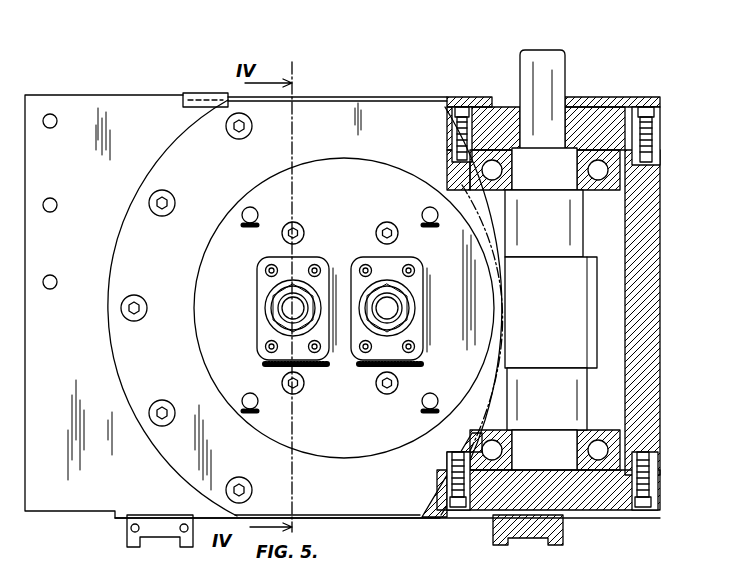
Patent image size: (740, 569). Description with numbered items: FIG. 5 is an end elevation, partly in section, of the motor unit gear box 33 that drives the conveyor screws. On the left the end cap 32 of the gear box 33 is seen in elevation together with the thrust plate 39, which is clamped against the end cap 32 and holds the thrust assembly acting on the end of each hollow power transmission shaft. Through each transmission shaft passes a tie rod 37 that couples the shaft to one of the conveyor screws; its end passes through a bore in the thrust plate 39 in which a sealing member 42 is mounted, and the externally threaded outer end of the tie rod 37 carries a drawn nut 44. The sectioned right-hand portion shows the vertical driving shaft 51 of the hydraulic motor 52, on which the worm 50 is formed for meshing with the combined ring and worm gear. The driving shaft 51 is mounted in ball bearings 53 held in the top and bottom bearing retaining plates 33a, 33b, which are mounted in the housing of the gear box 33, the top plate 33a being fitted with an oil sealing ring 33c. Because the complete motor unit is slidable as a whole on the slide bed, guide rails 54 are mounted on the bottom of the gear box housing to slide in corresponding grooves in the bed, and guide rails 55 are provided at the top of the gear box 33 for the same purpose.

The end cap 32 is at (165, 172).
The gear box 33 is at (76, 98).
The top bearing retaining plate 33a is at (588, 105).
The bottom bearing retaining plate 33b is at (615, 512).
The oil sealing ring 33c is at (505, 106).
The tie rod 37 is at (290, 310).
The thrust plate 39 is at (230, 205).
The sealing member 42 is at (262, 340).
The drawn nut 44 is at (266, 294).
The worm 50 is at (598, 348).
The vertical driving shaft 51 is at (520, 62).
The hydraulic motor 52 is at (502, 290).
The ball bearings 53 is at (612, 192).
The guide rails 54 is at (129, 534).
The guide rails 55 is at (206, 94).